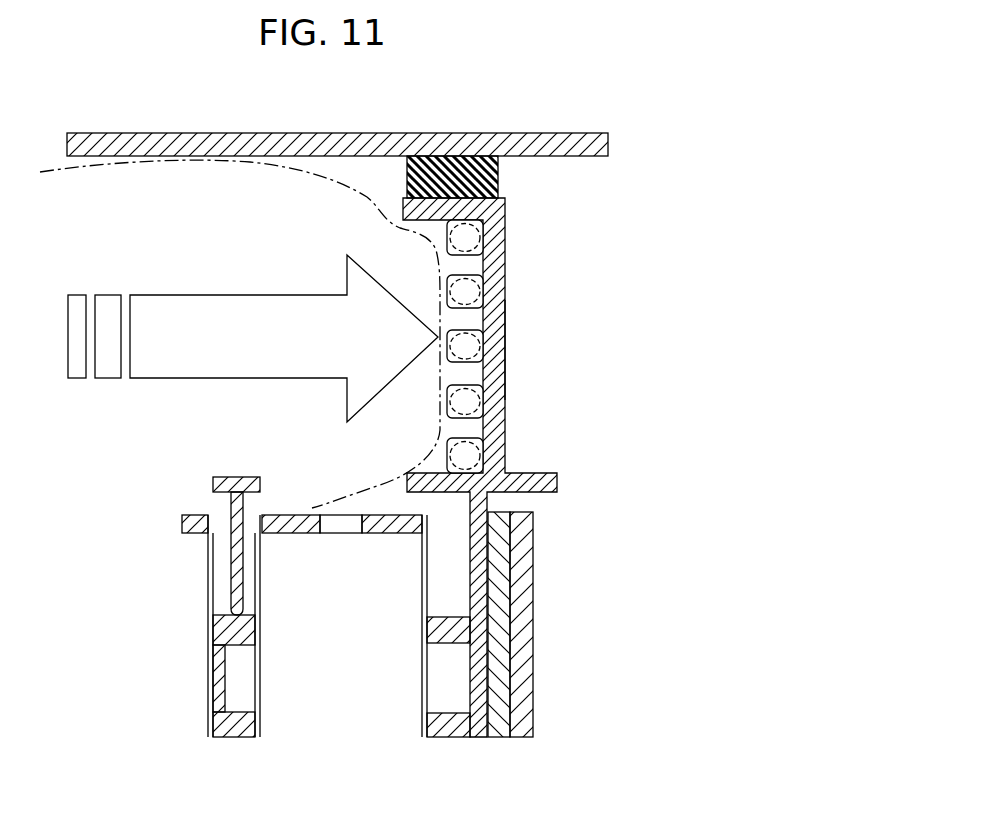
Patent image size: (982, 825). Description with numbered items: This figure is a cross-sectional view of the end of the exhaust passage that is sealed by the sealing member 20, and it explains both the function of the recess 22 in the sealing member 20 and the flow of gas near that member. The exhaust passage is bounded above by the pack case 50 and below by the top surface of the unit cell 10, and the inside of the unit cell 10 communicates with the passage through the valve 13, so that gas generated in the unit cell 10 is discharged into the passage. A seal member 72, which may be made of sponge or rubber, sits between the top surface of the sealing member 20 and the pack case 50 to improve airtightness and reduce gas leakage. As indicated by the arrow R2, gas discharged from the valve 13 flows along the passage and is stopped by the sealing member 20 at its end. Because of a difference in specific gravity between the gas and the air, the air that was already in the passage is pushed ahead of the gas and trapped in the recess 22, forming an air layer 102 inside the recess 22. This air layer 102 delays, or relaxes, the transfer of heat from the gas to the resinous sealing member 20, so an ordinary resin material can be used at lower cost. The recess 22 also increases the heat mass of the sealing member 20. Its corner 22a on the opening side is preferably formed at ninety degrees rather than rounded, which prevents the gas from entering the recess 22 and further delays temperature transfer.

The pack case 50 is at (610, 144).
The seal member 72 is at (500, 178).
The sealing member 20 is at (510, 275).
The recess 22 is at (478, 303).
The corner 22a is at (447, 472).
The air layer 102 is at (508, 338).
The unit cell 10 is at (305, 513).
The valve 13 is at (200, 489).
The arrow R2 is at (248, 295).